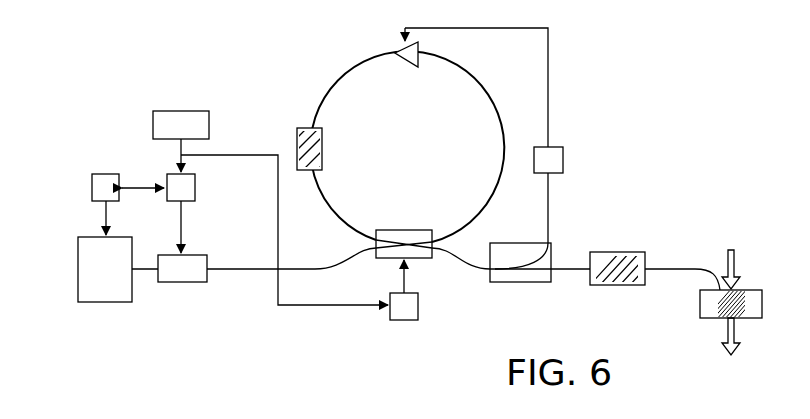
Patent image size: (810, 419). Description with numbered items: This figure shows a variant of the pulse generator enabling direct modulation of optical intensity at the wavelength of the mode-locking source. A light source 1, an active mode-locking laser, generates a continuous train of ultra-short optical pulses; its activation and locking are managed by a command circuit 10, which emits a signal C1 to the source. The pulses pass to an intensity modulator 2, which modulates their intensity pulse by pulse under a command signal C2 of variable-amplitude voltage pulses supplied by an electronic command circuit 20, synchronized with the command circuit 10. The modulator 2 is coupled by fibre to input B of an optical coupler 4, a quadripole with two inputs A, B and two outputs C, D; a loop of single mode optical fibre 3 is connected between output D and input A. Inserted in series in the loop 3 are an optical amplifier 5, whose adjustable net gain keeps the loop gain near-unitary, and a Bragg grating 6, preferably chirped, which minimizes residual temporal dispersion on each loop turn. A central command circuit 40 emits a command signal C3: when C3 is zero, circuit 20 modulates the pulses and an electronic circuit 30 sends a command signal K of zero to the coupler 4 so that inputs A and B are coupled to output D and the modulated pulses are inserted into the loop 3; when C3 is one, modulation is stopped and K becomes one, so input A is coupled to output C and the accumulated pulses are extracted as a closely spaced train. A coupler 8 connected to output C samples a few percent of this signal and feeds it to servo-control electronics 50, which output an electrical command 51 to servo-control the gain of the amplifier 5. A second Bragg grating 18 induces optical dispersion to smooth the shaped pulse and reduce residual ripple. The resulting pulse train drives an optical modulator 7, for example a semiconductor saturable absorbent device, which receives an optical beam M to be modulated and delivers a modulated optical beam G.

The light source 1 is at (105, 305).
The intensity modulator 2 is at (182, 286).
The loop of single mode optical fibre 3 is at (478, 78).
The optical coupler 4 is at (412, 230).
The optical amplifier 5 is at (415, 65).
The Bragg grating 6 is at (297, 150).
The optical modulator 7 is at (750, 305).
The coupler 8 is at (520, 283).
The command circuit 10 is at (92, 186).
The second Bragg grating 18 is at (618, 250).
The command circuit 20 is at (196, 188).
The electronic circuit 30 is at (412, 320).
The central command circuit 40 is at (180, 110).
The electronic servo device 50 is at (563, 160).
The electrical command 51 is at (404, 44).
The command signal C1 is at (104, 218).
The command signal C2 is at (180, 221).
The command signal C3 is at (180, 148).
The command signal K is at (410, 280).
The optical beam to be modulated M is at (731, 258).
The modulated optical beam G is at (725, 347).